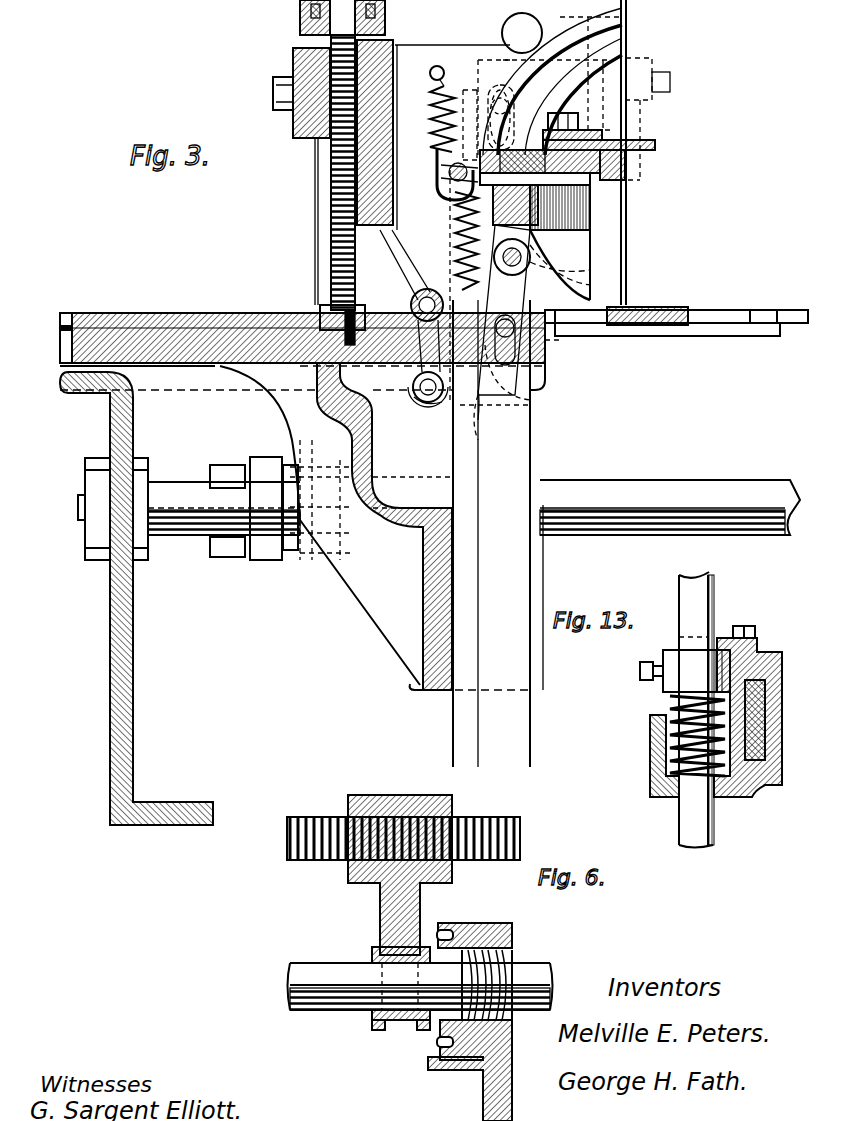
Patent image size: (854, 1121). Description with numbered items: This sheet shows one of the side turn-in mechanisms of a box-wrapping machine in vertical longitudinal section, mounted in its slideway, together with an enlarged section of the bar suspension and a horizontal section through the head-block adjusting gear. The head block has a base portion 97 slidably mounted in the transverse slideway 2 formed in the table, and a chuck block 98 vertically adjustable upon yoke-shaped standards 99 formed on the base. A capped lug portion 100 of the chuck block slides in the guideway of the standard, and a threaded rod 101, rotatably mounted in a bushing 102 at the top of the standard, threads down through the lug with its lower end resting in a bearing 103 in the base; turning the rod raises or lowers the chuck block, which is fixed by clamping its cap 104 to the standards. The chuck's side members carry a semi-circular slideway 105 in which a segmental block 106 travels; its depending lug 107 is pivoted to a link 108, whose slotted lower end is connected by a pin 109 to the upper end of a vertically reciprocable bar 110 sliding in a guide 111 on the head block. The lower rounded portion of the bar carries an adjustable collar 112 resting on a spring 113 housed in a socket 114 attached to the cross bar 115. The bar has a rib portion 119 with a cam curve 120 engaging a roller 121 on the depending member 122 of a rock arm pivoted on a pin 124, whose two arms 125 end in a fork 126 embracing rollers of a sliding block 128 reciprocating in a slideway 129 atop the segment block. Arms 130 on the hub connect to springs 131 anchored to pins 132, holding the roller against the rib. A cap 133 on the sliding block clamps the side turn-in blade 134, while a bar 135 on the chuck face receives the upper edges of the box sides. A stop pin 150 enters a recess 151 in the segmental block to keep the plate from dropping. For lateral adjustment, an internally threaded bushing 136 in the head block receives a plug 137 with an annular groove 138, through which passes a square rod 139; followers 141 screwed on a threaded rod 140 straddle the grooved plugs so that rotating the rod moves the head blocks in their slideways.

In FIG. 3, the transverse slideway 2 is at (62, 345).
In FIG. 3, the head block base portion 97 is at (192, 335).
In FIG. 3, the chuck block 98 is at (395, 72).
In FIG. 3, the standards 99 is at (315, 203).
In FIG. 3, the capped lug portion 100 is at (322, 140).
In FIG. 3, the threaded rod 101 is at (338, 241).
In FIG. 3, the bushing 102 is at (300, 25).
In FIG. 3, the bearing 103 is at (382, 315).
In FIG. 3, the cap 104 is at (293, 57).
In FIG. 3, the semi-circular slideway 105 is at (590, 20).
In FIG. 3, the segmental block 106 is at (578, 212).
In FIG. 3, the depending lug 107 is at (575, 232).
In FIG. 3, the link 108 is at (508, 297).
In FIG. 3, the pin 109 is at (512, 332).
In FIG. 3, the vertically reciprocable bar 110 is at (522, 430).
In FIG. 13, the vertically reciprocable bar 110 is at (716, 588).
In FIG. 3, the guide 111 is at (442, 598).
In FIG. 13, the adjustable collar 112 is at (685, 671).
In FIG. 13, the spring 113 is at (668, 700).
In FIG. 13, the socket 114 is at (650, 745).
In FIG. 13, the cross bar 115 is at (782, 718).
In FIG. 3, the rib portion 119 is at (466, 455).
In FIG. 3, the cam curve 120 is at (455, 395).
In FIG. 3, the roller 121 is at (434, 398).
In FIG. 3, the depending member 122 is at (426, 352).
In FIG. 3, the pin 124 is at (420, 340).
In FIG. 3, the arms 125 is at (437, 218).
In FIG. 3, the fork 126 is at (441, 186).
In FIG. 3, the sliding block 128 is at (612, 160).
In FIG. 3, the slideway 129 is at (595, 190).
In FIG. 3, the arms 130 is at (445, 290).
In FIG. 3, the springs 131 is at (436, 113).
In FIG. 3, the pins 132 is at (446, 72).
In FIG. 3, the cap 133 is at (600, 133).
In FIG. 3, the side turn-in blade 134 is at (652, 144).
In FIG. 3, the bar 135 is at (626, 168).
In FIG. 6, the internally threaded bushing 136 is at (512, 940).
In FIG. 3, the plug 137 is at (292, 548).
In FIG. 6, the plug 137 is at (514, 960).
In FIG. 3, the annular groove 138 is at (258, 545).
In FIG. 6, the annular groove 138 is at (395, 1020).
In FIG. 3, the square rod 139 is at (602, 490).
In FIG. 6, the square rod 139 is at (305, 975).
In FIG. 6, the threaded rod 140 is at (300, 820).
In FIG. 3, the followers 141 is at (228, 472).
In FIG. 6, the followers 141 is at (380, 905).
In FIG. 3, the stop pin 150 is at (445, 162).
In FIG. 3, the recess 151 is at (441, 180).